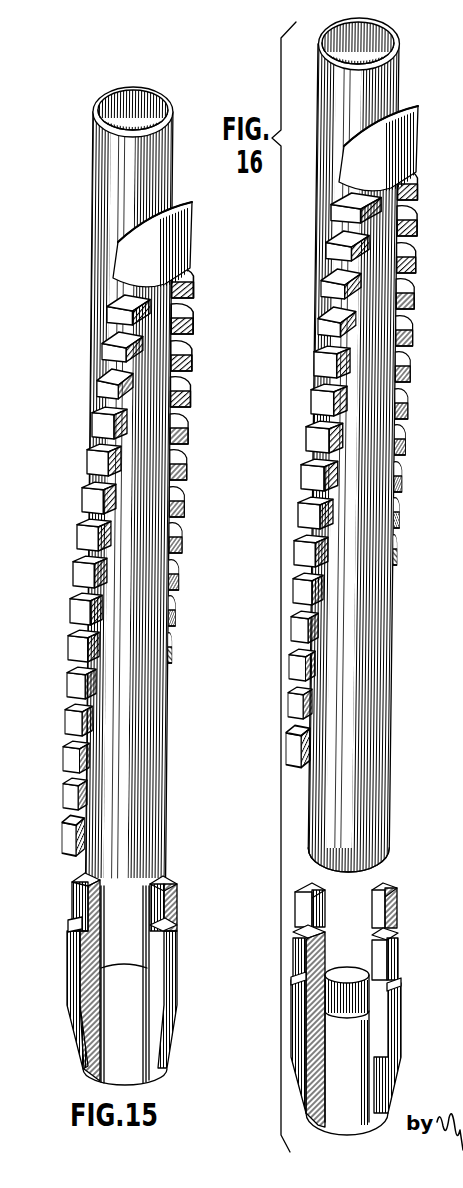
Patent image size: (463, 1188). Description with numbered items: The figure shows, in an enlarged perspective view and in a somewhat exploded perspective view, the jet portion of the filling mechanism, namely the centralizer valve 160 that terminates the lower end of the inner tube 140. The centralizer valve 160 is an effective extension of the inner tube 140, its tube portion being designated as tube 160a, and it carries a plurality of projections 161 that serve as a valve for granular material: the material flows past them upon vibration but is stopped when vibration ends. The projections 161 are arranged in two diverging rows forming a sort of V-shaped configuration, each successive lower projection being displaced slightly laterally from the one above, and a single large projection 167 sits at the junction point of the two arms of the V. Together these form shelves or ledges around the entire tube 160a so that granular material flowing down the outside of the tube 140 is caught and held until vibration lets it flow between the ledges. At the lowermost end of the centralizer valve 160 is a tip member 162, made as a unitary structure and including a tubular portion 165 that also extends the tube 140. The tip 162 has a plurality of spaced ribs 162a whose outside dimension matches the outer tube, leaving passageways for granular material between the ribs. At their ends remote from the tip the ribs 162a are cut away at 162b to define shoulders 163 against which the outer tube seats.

In FIG. 15, the inner tube 140 is at (98, 131).
In FIG. 16, the inner tube 140 is at (394, 72).
In FIG. 15, the centralizer valve 160 is at (115, 588).
In FIG. 16, the centralizer valve 160 is at (370, 590).
In FIG. 15, the tube portion of the centralizer valve 160a is at (219, 808).
In FIG. 16, the tube portion of the centralizer valve 160a is at (434, 789).
In FIG. 15, the projections 161 is at (78, 535).
In FIG. 15, the tip member 162 is at (95, 981).
In FIG. 16, the tip member 162 is at (372, 1021).
In FIG. 15, the ribs 162a is at (78, 985).
In FIG. 16, the ribs 162a is at (394, 1002).
In FIG. 15, the cut away portions 162b is at (83, 900).
In FIG. 16, the cut away portions 162b is at (395, 910).
In FIG. 15, the shoulders 163 is at (72, 925).
In FIG. 16, the shoulders 163 is at (398, 963).
In FIG. 15, the tubular portion 165 is at (116, 1073).
In FIG. 16, the tubular portion 165 is at (340, 1120).
In FIG. 15, the single large projection 167 is at (137, 238).